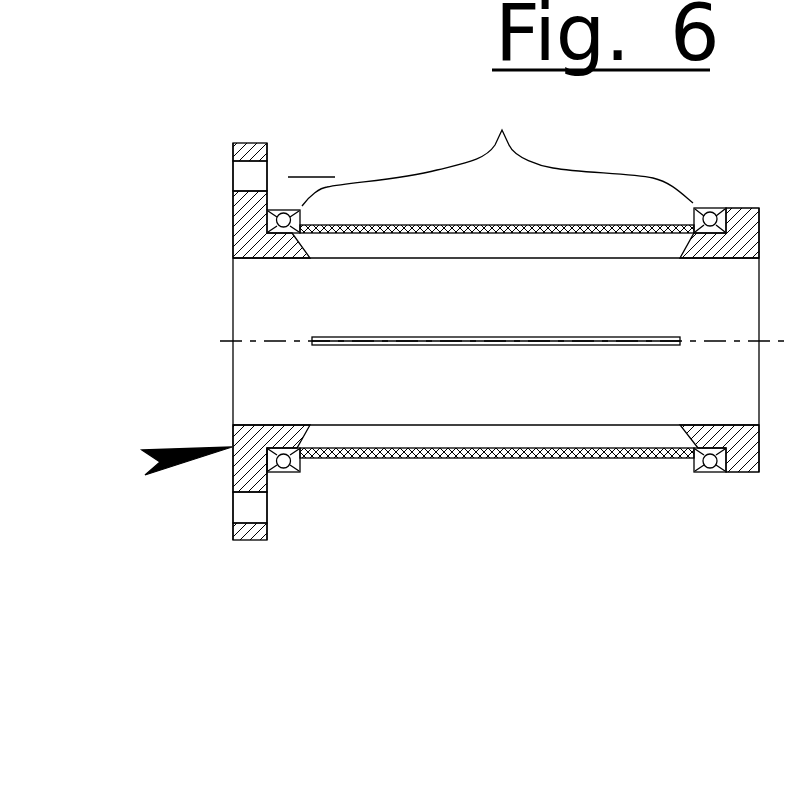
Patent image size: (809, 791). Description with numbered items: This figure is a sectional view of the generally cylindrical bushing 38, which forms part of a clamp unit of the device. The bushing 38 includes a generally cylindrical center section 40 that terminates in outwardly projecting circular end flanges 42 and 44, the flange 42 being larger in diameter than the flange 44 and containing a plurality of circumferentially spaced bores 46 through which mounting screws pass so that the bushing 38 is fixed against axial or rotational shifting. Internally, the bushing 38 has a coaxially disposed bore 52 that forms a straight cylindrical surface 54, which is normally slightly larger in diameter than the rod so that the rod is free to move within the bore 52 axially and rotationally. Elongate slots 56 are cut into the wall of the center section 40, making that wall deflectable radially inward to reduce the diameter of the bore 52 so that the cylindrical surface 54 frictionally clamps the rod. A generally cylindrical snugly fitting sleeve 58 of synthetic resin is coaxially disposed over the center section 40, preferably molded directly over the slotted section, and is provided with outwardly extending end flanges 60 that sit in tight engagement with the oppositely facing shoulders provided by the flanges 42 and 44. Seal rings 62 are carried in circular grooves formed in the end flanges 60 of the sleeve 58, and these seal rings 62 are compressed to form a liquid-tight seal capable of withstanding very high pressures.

The bushing 38 is at (152, 463).
The center section 40 is at (497, 147).
The end flange 42 is at (237, 222).
The end flange 44 is at (753, 208).
The bores 46 is at (240, 177).
The bore 52 is at (466, 323).
The cylindrical surface 54 is at (262, 425).
The elongate slots 56 is at (508, 249).
The sleeve 58 is at (537, 458).
The end flanges 60 is at (298, 462).
The seal rings 62 is at (335, 508).